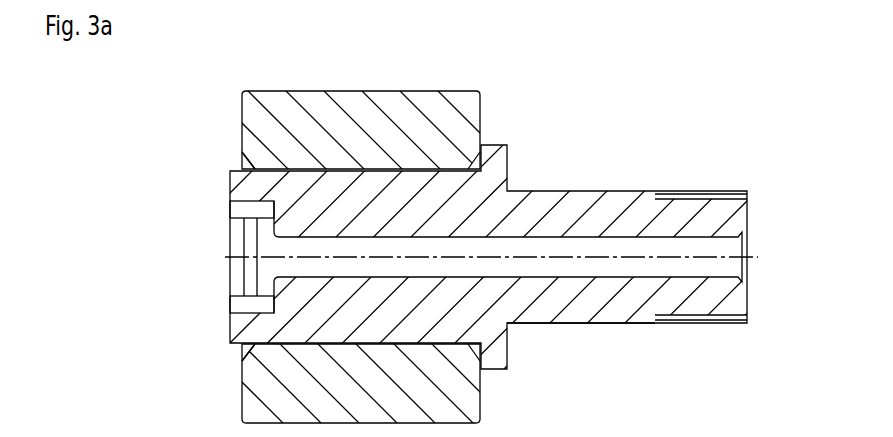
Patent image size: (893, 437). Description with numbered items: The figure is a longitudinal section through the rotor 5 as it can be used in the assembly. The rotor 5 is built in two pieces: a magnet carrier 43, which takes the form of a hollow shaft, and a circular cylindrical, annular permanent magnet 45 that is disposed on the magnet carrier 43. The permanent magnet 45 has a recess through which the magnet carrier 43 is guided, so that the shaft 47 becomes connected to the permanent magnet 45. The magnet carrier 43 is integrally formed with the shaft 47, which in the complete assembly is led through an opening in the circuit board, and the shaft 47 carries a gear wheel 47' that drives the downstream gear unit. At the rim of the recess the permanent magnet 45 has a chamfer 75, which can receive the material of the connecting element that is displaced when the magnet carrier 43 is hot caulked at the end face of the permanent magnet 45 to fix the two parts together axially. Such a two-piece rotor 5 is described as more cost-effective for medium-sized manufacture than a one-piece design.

The rotor 5 is at (618, 128).
The magnet carrier 43 is at (588, 190).
The permanent magnet 45 is at (350, 91).
The shaft 47 is at (599, 374).
The gear wheel 47' is at (701, 165).
The chamfer 75 is at (243, 353).